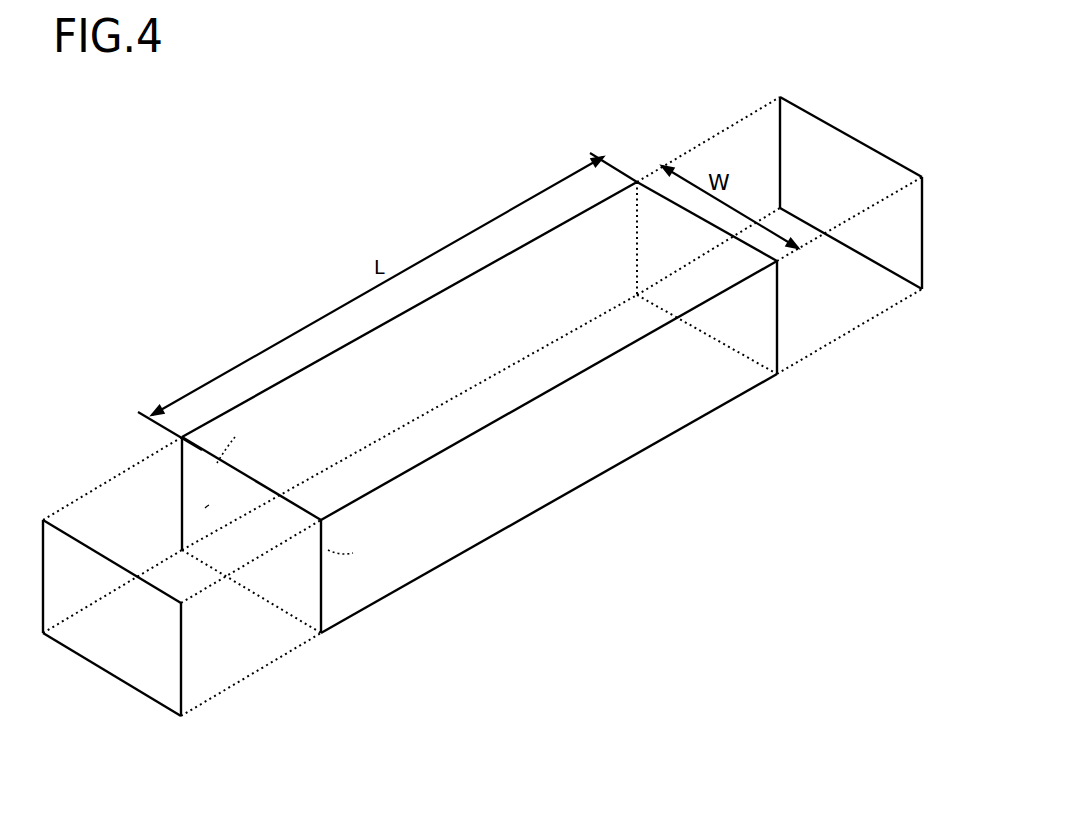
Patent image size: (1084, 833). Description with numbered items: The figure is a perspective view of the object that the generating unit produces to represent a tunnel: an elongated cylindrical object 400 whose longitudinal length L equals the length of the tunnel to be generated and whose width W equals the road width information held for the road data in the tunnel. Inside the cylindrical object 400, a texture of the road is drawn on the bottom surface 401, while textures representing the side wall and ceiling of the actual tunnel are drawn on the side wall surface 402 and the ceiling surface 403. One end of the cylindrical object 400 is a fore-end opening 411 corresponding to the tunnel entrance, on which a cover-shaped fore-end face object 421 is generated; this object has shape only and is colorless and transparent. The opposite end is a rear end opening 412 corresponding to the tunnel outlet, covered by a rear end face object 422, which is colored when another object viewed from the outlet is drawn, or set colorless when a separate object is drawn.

The cylindrical object 400 is at (622, 92).
The bottom surface 401 is at (286, 597).
The side wall surface 402 is at (207, 508).
The ceiling surface 403 is at (217, 463).
The fore-end opening 411 is at (257, 580).
The rear end opening 412 is at (806, 297).
The fore-end face object 421 is at (112, 658).
The rear end face object 422 is at (927, 213).